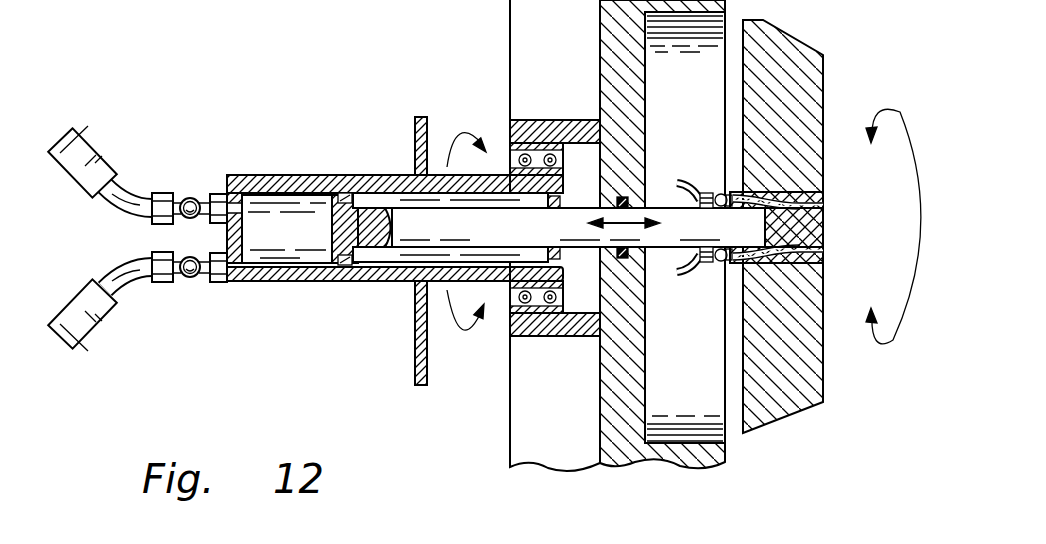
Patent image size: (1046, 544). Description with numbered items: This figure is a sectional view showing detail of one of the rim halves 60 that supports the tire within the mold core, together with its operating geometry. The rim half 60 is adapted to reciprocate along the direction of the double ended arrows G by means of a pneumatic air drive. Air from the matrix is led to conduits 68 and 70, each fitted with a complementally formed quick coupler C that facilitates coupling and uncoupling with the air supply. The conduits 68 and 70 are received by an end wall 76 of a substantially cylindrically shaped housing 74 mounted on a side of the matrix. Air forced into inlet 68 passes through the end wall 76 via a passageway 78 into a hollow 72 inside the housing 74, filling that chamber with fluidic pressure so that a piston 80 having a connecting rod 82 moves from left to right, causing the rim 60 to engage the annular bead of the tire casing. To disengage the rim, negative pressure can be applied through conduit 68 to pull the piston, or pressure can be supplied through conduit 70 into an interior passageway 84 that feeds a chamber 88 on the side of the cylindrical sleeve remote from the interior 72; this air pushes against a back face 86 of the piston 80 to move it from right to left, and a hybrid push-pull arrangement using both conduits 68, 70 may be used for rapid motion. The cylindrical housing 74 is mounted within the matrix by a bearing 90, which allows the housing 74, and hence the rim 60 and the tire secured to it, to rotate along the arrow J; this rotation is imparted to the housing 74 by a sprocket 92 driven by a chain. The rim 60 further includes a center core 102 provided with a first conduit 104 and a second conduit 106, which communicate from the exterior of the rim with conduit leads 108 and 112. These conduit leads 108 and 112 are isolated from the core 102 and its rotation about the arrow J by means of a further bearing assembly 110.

The rim half 60 is at (793, 57).
The conduit 68 is at (143, 196).
The conduit 70 is at (118, 284).
The hollow 72 is at (283, 175).
The cylindrical housing 74 is at (397, 175).
The end wall 76 is at (232, 232).
The passageway 78 is at (230, 180).
The piston 80 is at (335, 236).
The connecting rod 82 is at (480, 238).
The interior passageway 84 is at (290, 273).
The back face 86 is at (367, 193).
The chamber 88 is at (417, 257).
The bearing 90 is at (510, 307).
The sprocket 92 is at (415, 372).
The center core 102 is at (823, 228).
The first conduit 104 is at (823, 204).
The second conduit 106 is at (823, 245).
The conduit lead 108 is at (678, 188).
The bearing assembly 110 is at (722, 262).
The conduit lead 112 is at (690, 265).
The quick coupler C is at (80, 128).
The double ended arrows G is at (600, 222).
The arrow J is at (462, 117).